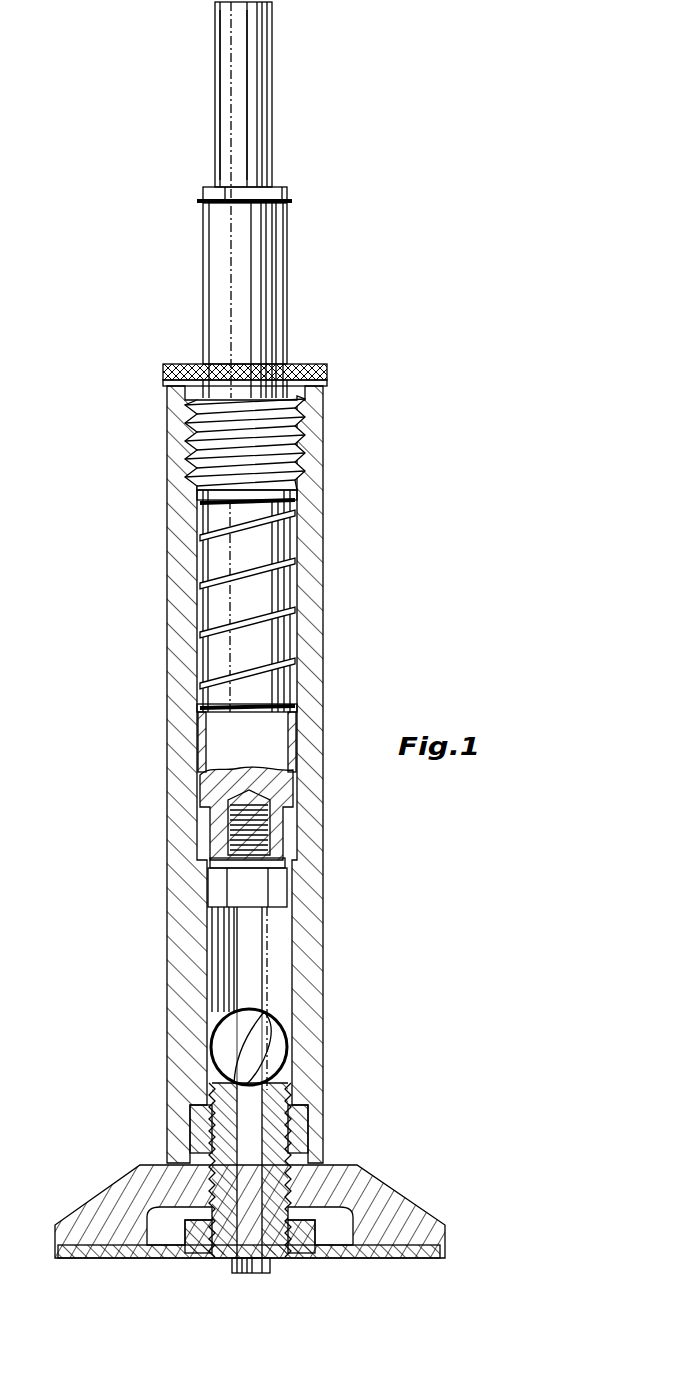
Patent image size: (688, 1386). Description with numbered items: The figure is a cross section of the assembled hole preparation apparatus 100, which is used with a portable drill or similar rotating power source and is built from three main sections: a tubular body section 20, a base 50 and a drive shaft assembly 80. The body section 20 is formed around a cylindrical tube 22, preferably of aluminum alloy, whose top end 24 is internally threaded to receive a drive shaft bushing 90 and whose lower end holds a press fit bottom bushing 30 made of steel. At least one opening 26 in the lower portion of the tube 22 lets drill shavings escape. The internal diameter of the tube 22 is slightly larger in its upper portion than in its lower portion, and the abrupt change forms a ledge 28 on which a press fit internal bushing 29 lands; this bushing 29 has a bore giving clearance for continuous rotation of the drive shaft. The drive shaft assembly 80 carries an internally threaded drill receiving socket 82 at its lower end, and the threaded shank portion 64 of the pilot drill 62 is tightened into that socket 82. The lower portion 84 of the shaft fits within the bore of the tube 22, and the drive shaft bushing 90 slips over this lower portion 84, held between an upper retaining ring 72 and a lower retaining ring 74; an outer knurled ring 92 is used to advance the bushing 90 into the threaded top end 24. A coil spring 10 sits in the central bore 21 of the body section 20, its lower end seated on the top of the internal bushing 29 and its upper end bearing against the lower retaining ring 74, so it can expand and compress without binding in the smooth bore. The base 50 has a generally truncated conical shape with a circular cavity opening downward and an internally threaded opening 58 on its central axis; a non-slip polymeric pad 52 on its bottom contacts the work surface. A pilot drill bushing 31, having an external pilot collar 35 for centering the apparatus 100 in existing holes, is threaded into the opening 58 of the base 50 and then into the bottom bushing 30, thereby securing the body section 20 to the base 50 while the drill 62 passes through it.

The hole preparation apparatus 100 is at (413, 487).
The drive shaft assembly 80 is at (278, 80).
The drill receiving socket 82 is at (215, 85).
The upper retaining ring 72 is at (292, 202).
The lower portion of the drive shaft 84 is at (203, 255).
The knurled ring 92 is at (163, 368).
The tubular body section 20 is at (327, 698).
The cylindrical tube 22 is at (307, 537).
The drive shaft bushing 90 is at (305, 437).
The top end of the tube 24 is at (195, 438).
The lower retaining ring 74 is at (203, 505).
The central bore 21 is at (300, 615).
The coil spring 10 is at (200, 643).
The internal bushing 29 is at (200, 778).
The ledge 28 is at (298, 822).
The threaded shank portion 64 is at (213, 797).
The pilot drill 62 is at (260, 978).
The opening 26 is at (300, 1077).
The bottom bushing 30 is at (195, 1131).
The base 50 is at (388, 1175).
The non-slip polymeric pad 52 is at (420, 1262).
The pilot drill bushing 31 is at (290, 1250).
The internally threaded opening 58 is at (340, 1245).
The pilot collar 35 is at (228, 1270).